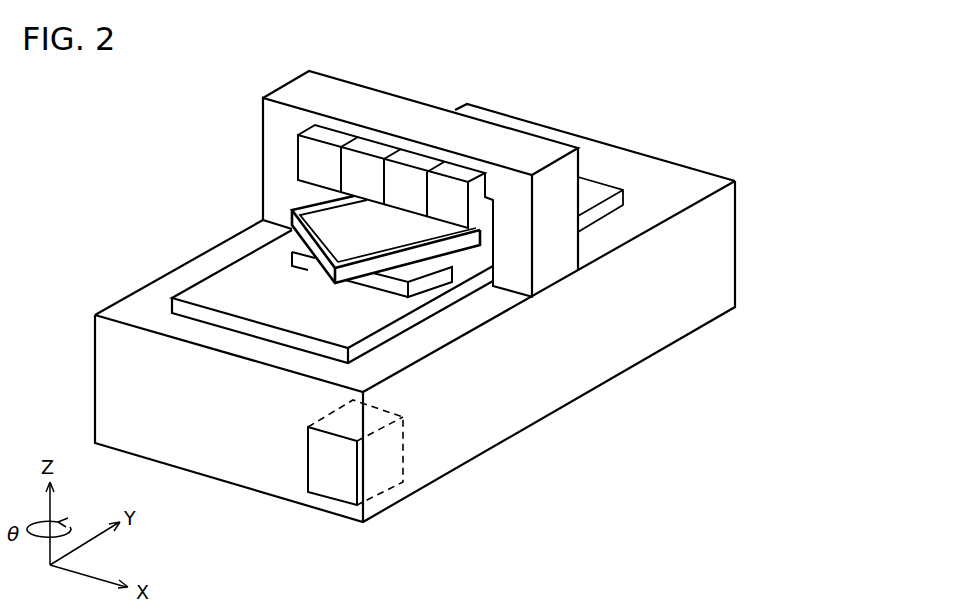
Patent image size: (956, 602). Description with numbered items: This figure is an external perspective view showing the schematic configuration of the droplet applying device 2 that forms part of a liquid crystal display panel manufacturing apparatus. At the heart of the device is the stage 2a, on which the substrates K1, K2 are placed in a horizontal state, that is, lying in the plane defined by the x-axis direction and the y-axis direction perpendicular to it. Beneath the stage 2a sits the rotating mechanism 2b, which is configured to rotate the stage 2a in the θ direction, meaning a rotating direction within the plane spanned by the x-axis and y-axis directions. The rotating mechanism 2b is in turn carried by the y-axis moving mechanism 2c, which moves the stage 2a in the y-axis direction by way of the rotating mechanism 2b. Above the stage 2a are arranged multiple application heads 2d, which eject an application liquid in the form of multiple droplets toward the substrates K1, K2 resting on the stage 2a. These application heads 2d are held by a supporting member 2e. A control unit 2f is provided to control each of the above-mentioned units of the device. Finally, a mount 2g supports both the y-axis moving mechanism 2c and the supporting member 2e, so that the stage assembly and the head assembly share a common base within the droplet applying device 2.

The droplet applying device 2 is at (676, 69).
The stage 2a is at (290, 212).
The rotating mechanism 2b is at (297, 251).
The y-axis moving mechanism 2c is at (208, 282).
The application heads 2d is at (457, 171).
The supporting member 2e is at (506, 143).
The control unit 2f is at (336, 475).
The mount 2g is at (510, 412).
The substrate K1 is at (318, 214).
The substrate K2 is at (407, 245).